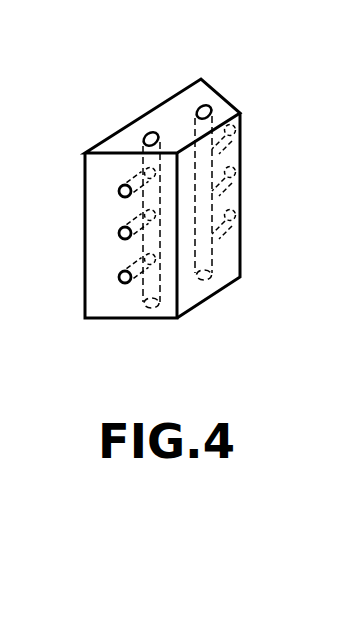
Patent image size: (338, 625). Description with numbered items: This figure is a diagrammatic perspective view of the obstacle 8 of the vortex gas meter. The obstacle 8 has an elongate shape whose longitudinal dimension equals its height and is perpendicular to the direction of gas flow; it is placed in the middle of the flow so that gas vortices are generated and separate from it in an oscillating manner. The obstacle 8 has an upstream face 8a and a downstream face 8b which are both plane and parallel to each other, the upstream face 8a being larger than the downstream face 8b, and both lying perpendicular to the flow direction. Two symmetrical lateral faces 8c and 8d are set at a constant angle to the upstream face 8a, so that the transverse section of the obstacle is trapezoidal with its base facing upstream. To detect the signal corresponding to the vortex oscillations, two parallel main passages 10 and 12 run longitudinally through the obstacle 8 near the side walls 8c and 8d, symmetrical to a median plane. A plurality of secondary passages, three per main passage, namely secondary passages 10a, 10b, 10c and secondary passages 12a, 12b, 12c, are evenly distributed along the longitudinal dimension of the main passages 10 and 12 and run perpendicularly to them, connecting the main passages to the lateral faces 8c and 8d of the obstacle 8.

The obstacle 8 is at (135, 95).
The upstream face 8a is at (97, 148).
The downstream face 8b is at (230, 197).
The lateral face 8c is at (233, 103).
The lateral face 8d is at (98, 250).
The main passage 10 is at (150, 133).
The secondary passage 10a is at (117, 191).
The secondary passage 10b is at (118, 232).
The secondary passage 10c is at (123, 283).
The main passage 12 is at (211, 105).
The secondary passage 12a is at (242, 124).
The secondary passage 12b is at (243, 166).
The secondary passage 12c is at (243, 218).